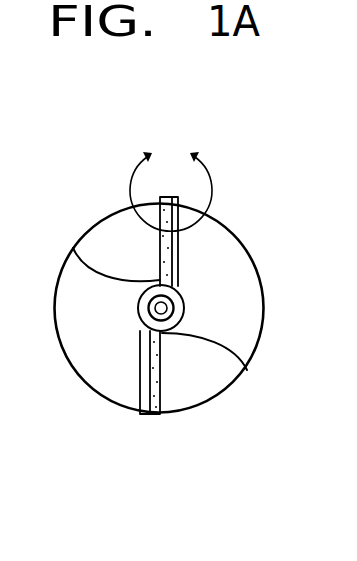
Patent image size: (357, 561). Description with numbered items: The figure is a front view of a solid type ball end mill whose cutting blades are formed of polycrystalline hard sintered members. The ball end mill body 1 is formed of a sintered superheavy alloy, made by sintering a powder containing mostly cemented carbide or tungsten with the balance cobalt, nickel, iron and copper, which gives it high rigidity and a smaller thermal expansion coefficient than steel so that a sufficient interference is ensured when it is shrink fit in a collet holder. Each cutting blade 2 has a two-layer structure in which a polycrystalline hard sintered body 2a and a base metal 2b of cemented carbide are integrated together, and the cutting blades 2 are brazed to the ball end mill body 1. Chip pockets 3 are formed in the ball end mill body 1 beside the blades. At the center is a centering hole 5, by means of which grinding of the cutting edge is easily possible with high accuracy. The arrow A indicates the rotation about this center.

The ball end mill body 1 is at (90, 357).
The cutting blade 2 is at (192, 360).
The polycrystalline hard sintered body 2a is at (153, 417).
The base metal 2b is at (148, 382).
The chip pocket 3 is at (108, 242).
The centering hole 5 is at (175, 295).
The rotation direction A is at (171, 182).